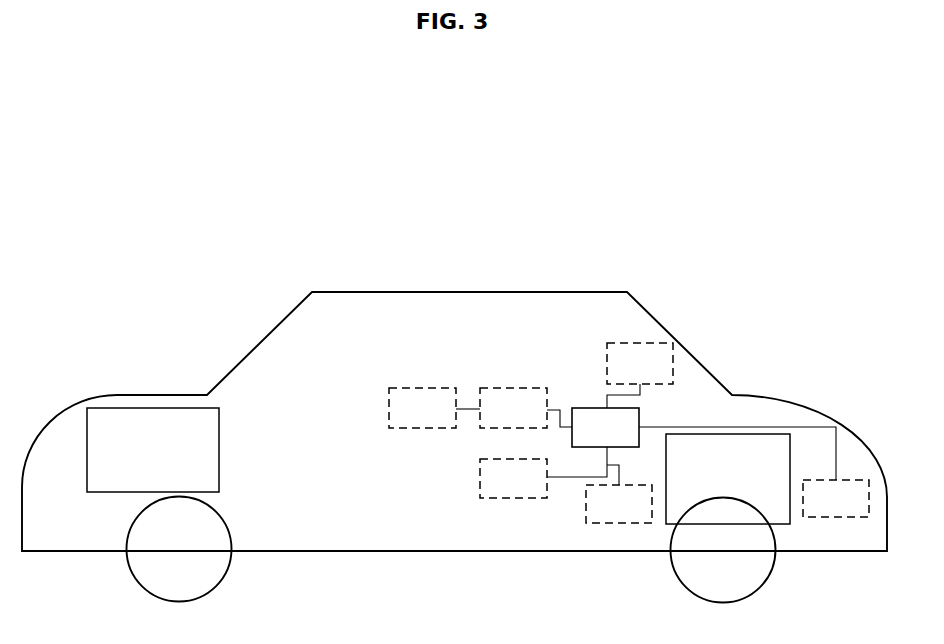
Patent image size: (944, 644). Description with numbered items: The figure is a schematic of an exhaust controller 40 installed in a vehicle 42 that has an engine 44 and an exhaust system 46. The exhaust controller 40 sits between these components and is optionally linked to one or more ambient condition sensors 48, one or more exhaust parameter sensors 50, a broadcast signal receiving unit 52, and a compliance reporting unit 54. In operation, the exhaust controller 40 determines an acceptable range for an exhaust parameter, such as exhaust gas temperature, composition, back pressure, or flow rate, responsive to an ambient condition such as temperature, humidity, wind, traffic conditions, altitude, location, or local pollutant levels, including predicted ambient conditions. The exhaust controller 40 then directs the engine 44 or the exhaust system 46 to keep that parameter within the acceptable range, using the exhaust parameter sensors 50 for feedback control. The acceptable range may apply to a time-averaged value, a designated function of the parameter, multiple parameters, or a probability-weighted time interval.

The exhaust controller 40 is at (593, 408).
The vehicle 42 is at (282, 343).
The engine 44 is at (143, 427).
The exhaust system 46 is at (740, 440).
The ambient condition sensors 48 is at (412, 403).
The exhaust parameter sensors 50 is at (611, 517).
The broadcast signal receiving unit 52 is at (660, 357).
The compliance reporting unit 54 is at (495, 497).